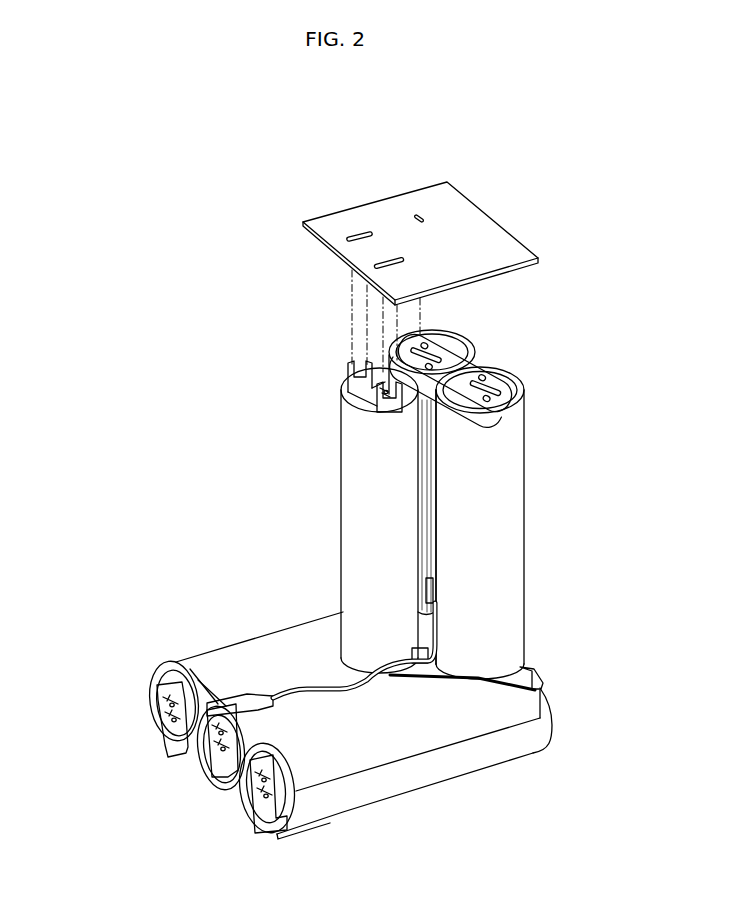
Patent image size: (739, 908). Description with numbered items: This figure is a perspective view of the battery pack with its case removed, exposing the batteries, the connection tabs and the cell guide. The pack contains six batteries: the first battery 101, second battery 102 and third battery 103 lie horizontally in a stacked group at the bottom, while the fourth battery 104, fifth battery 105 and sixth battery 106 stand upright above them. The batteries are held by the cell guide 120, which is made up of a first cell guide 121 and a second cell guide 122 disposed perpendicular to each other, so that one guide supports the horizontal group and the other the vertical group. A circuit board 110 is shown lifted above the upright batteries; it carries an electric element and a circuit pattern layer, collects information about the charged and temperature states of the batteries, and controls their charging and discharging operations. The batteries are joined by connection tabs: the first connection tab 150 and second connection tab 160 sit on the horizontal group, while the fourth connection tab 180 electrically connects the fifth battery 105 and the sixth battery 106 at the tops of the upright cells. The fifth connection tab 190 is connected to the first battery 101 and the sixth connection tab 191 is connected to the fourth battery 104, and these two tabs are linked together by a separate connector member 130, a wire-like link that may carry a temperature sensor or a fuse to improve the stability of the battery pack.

The circuit board 110 is at (508, 203).
The sixth battery 106 is at (458, 340).
The fourth battery 104 is at (357, 482).
The fifth battery 105 is at (517, 485).
The fifth connection tab 190 is at (348, 370).
The second cell guide 122 is at (455, 365).
The fourth connection tab 180 is at (483, 370).
The cell guide 120 is at (364, 695).
The first cell guide 121 is at (240, 647).
The second connection tab 160 is at (553, 669).
The third battery 103 is at (163, 675).
The first connection tab 150 is at (150, 741).
The first battery 101 is at (220, 778).
The sixth connection tab 191 is at (203, 730).
The second battery 102 is at (370, 792).
The connector member 130 is at (362, 690).